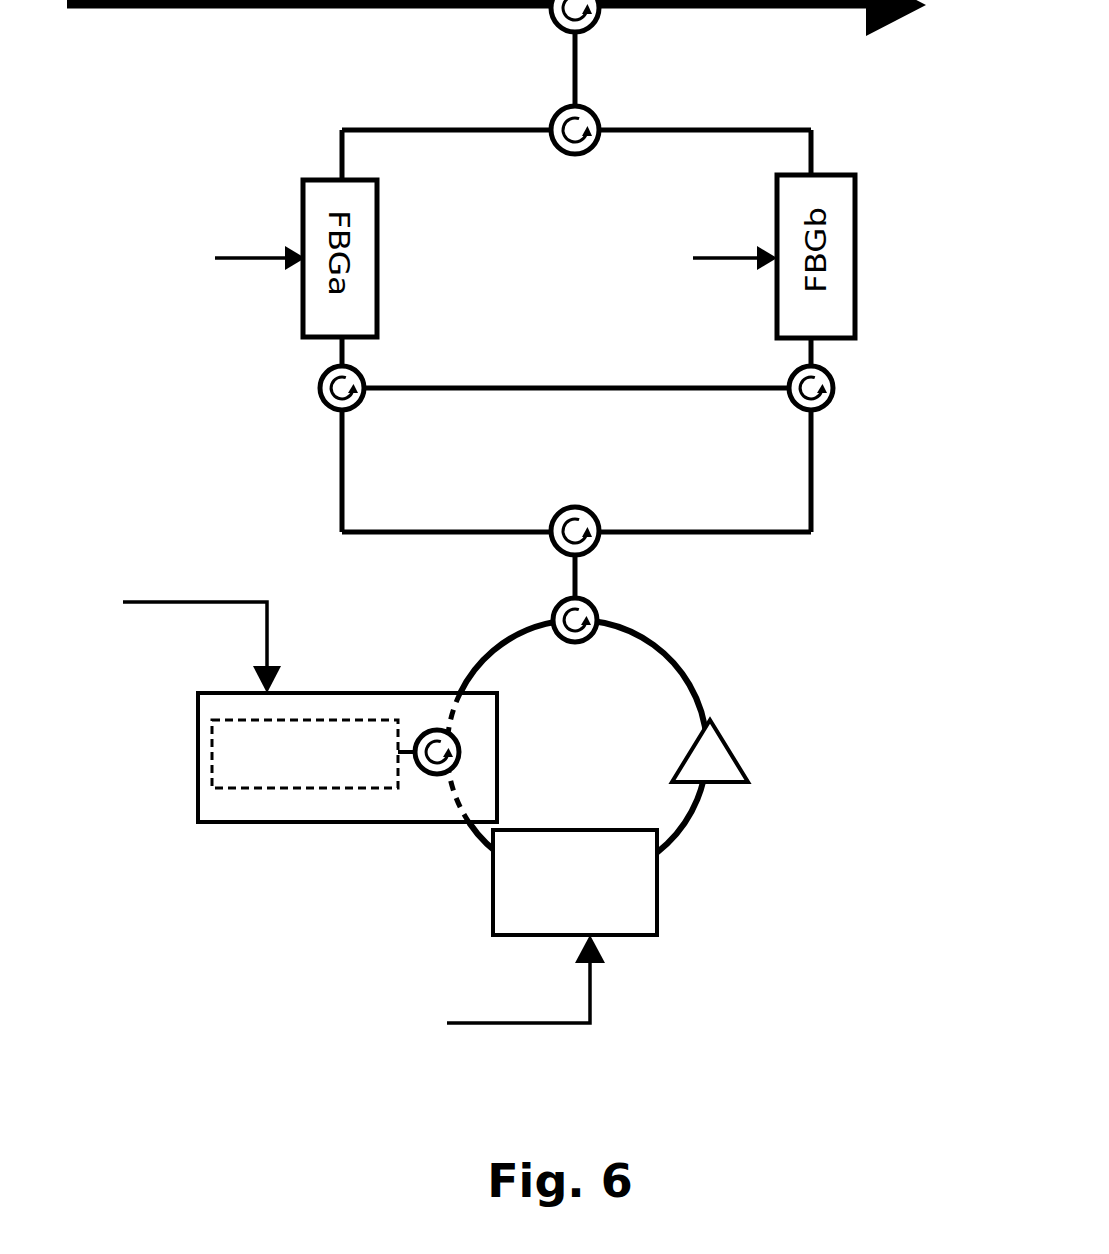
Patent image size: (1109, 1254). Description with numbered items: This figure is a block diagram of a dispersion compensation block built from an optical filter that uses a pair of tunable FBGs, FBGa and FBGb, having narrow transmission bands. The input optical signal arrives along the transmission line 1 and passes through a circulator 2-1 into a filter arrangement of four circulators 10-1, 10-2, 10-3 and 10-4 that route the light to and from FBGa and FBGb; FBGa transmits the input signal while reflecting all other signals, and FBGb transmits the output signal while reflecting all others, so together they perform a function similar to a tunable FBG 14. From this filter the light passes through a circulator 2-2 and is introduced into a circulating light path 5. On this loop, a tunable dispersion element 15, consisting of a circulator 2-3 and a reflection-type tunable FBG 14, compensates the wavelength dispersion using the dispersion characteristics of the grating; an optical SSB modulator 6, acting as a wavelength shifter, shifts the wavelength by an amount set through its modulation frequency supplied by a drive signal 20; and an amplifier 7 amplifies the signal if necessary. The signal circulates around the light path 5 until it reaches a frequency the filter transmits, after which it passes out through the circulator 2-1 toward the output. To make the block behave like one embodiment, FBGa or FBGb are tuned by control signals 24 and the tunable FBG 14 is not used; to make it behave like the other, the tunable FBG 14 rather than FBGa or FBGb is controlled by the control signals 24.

The optical transmission line 1 is at (220, 10).
The circulator 2-1 is at (600, 10).
The circulator 2-2 is at (593, 598).
The circulator 2-3 is at (458, 740).
The light path 5 is at (692, 665).
The optical SSB modulator 6 is at (658, 890).
The amplifier 7 is at (690, 752).
The optical circulator 10-1 is at (575, 157).
The optical circulator 10-2 is at (318, 387).
The optical circulator 10-3 is at (837, 373).
The optical circulator 10-4 is at (576, 506).
The tunable FBG 14 is at (277, 788).
The tunable dispersion element 15 is at (233, 822).
The drive signal 20 is at (499, 986).
The control signals 24 is at (450, 467).